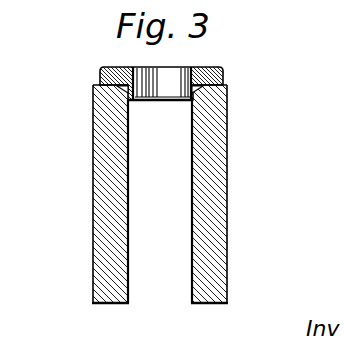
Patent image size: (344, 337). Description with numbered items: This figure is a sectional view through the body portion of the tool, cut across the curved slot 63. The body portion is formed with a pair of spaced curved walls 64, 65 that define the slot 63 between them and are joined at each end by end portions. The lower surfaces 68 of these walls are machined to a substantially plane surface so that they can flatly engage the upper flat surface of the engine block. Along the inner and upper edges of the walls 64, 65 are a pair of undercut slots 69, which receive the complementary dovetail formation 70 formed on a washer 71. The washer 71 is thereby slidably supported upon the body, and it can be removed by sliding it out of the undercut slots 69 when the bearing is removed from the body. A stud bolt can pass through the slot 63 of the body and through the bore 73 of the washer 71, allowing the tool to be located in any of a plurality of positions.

The curved slot 63 is at (193, 160).
The curved wall 64 is at (102, 200).
The curved wall 65 is at (213, 226).
The lower surfaces 68 is at (113, 305).
The undercut slots 69 is at (94, 92).
The dovetail formation 70 is at (228, 89).
The washer 71 is at (212, 67).
The bore 73 is at (134, 68).